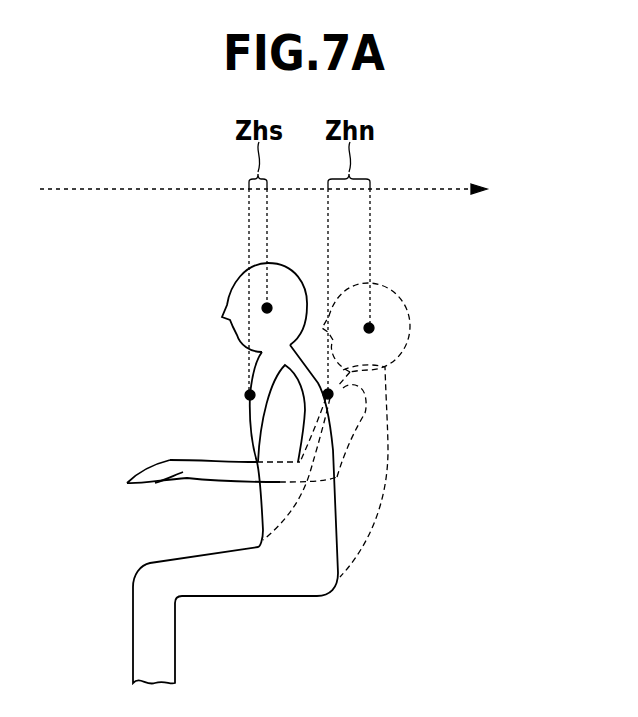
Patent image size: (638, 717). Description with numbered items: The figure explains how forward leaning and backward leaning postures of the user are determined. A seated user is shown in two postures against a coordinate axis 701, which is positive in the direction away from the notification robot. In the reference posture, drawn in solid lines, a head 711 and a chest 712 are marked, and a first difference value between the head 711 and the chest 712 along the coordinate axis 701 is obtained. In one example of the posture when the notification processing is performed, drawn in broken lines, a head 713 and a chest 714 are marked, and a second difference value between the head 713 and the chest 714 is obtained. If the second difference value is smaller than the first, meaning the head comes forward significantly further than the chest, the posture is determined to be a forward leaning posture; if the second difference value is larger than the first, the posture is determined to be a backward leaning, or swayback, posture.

The coordinate axis 701 is at (112, 189).
The head 711 is at (265, 308).
The chest 712 is at (248, 395).
The head 713 is at (372, 328).
The chest 714 is at (330, 396).